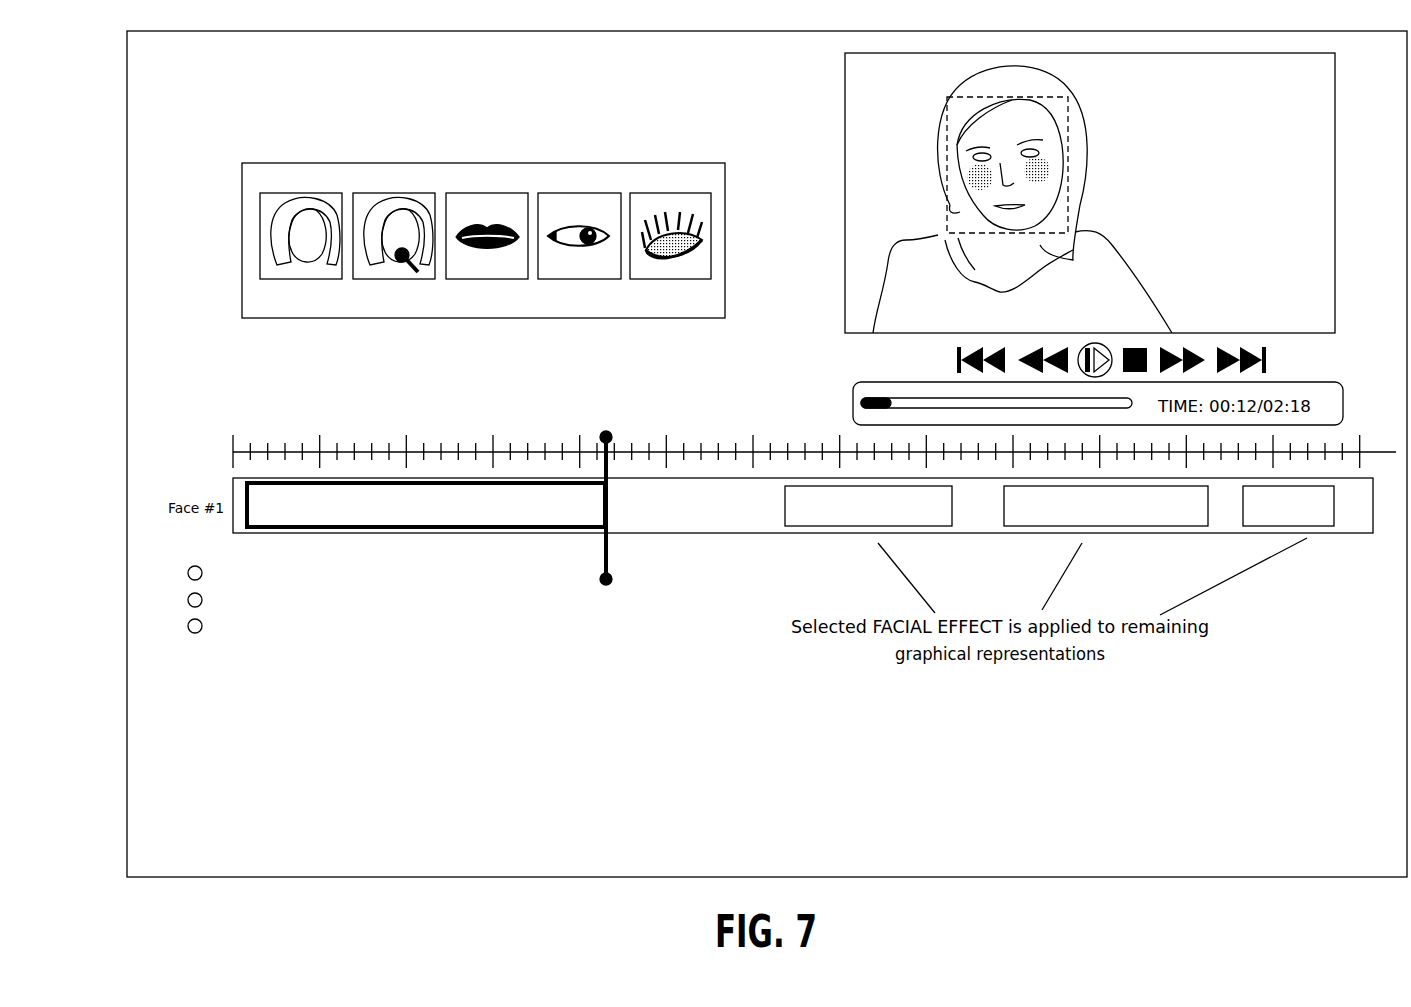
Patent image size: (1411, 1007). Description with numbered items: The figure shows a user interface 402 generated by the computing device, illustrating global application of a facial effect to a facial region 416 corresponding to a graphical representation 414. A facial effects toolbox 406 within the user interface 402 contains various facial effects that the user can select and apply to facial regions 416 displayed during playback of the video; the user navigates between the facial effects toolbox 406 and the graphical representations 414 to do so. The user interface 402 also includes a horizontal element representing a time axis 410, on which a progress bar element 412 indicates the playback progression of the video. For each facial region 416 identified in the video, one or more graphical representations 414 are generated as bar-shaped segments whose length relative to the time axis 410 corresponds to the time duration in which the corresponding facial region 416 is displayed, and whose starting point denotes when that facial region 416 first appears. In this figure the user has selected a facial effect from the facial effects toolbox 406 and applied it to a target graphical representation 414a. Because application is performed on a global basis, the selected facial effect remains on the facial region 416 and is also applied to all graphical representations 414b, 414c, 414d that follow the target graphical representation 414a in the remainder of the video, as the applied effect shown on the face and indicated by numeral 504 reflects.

The user interface 402 is at (192, 67).
The facial effects toolbox 406 is at (242, 224).
The time axis 410 is at (272, 428).
The progress bar element 412 is at (609, 550).
The graphical representation 414 is at (790, 457).
The target graphical representation 414a is at (495, 517).
The graphical representation 414b is at (847, 517).
The graphical representation 414c is at (1085, 517).
The graphical representation 414d is at (1267, 517).
The facial region 416 is at (937, 164).
The applied facial effect 504 is at (1052, 172).